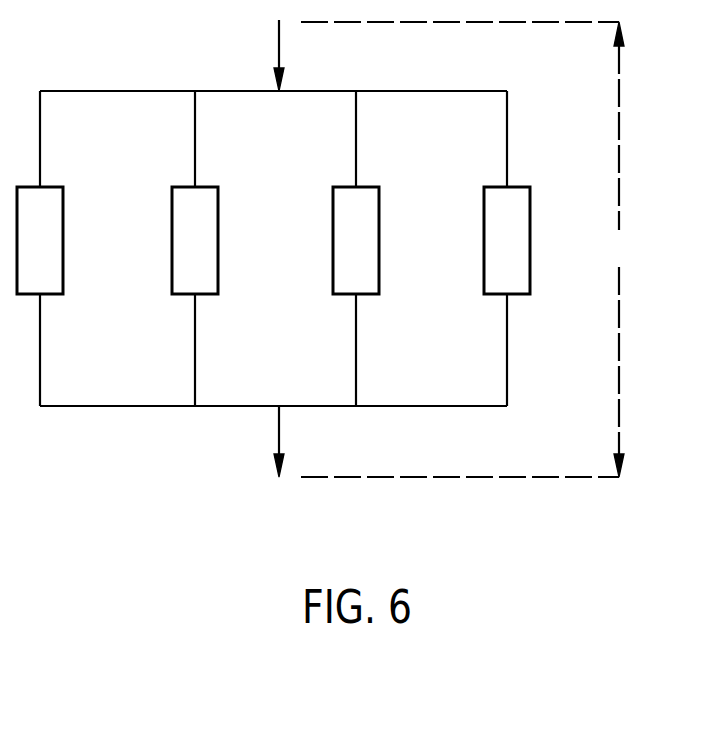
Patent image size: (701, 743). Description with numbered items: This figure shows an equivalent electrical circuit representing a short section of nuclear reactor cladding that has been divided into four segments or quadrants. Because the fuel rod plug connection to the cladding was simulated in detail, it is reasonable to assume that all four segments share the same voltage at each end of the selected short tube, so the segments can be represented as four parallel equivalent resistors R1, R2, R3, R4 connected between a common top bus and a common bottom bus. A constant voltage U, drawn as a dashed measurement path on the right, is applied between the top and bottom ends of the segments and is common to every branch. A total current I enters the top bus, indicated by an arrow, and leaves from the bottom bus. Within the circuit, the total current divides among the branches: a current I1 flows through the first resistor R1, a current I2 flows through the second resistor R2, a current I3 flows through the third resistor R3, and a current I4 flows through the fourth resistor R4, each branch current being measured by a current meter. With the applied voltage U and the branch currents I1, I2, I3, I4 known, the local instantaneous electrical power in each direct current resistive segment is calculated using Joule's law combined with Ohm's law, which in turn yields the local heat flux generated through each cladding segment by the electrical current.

The total current I is at (286, 248).
The constant voltage U is at (463, 249).
The current through first resistor I1 is at (55, 248).
The current through second resistor I2 is at (211, 248).
The current through third resistor I3 is at (371, 248).
The current through fourth resistor I4 is at (523, 248).
The first parallel equivalent resistor R1 is at (56, 240).
The second parallel equivalent resistor R2 is at (211, 240).
The third parallel equivalent resistor R3 is at (372, 240).
The fourth parallel equivalent resistor R4 is at (523, 240).